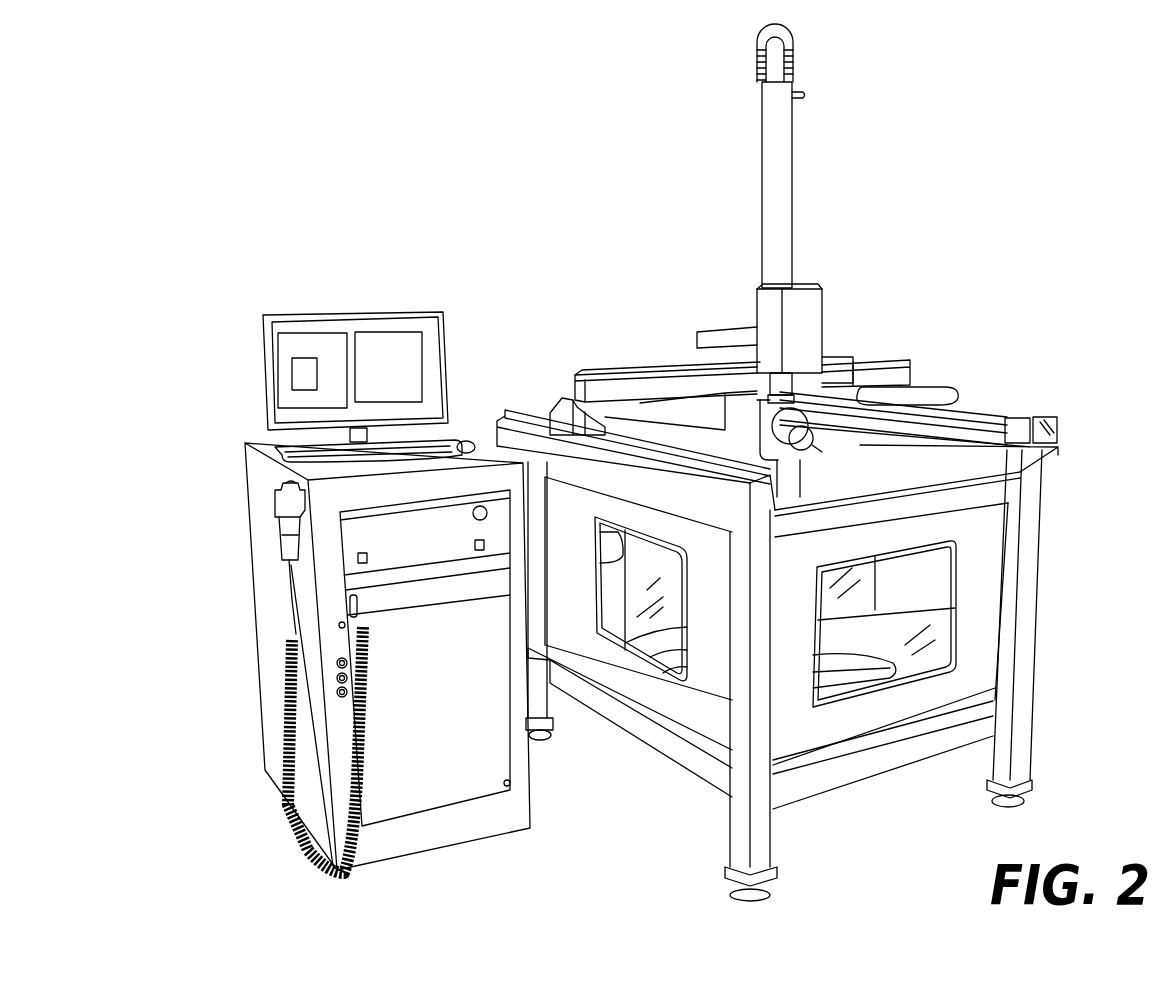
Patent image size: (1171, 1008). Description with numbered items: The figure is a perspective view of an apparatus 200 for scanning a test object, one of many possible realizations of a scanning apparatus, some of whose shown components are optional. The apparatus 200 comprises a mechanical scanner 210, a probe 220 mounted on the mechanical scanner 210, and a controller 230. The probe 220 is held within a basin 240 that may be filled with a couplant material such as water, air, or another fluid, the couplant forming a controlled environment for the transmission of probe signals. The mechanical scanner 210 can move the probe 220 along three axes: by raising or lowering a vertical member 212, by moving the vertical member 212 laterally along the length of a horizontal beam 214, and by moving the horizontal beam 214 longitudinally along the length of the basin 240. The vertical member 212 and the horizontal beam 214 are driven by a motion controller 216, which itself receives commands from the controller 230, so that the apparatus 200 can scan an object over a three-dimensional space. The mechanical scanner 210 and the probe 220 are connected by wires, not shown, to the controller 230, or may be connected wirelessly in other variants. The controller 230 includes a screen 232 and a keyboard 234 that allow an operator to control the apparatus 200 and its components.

The apparatus 200 is at (978, 160).
The mechanical scanner 210 is at (718, 248).
The vertical member 212 is at (795, 232).
The horizontal beam 214 is at (656, 368).
The motion controller 216 is at (825, 310).
The probe 220 is at (812, 437).
The controller 230 is at (268, 778).
The screen 232 is at (440, 337).
The keyboard 234 is at (266, 442).
The basin 240 is at (955, 580).